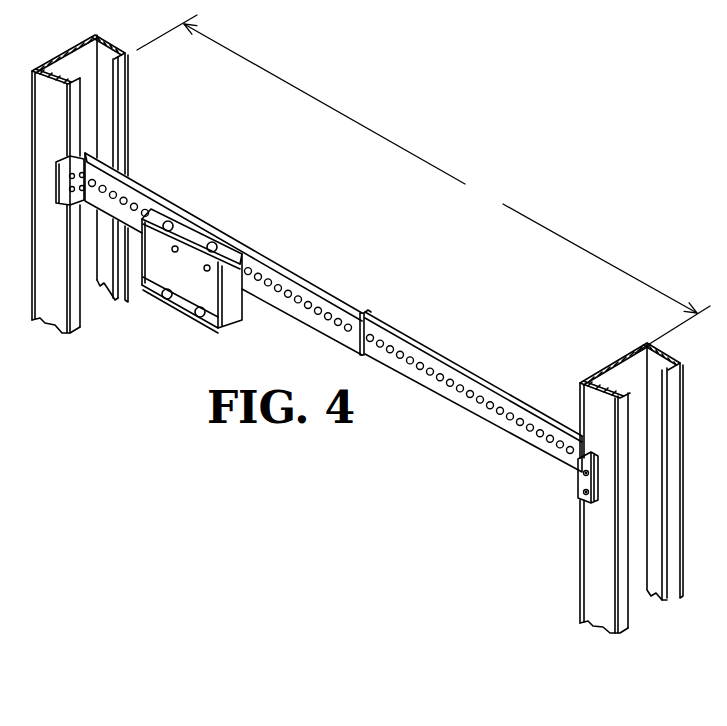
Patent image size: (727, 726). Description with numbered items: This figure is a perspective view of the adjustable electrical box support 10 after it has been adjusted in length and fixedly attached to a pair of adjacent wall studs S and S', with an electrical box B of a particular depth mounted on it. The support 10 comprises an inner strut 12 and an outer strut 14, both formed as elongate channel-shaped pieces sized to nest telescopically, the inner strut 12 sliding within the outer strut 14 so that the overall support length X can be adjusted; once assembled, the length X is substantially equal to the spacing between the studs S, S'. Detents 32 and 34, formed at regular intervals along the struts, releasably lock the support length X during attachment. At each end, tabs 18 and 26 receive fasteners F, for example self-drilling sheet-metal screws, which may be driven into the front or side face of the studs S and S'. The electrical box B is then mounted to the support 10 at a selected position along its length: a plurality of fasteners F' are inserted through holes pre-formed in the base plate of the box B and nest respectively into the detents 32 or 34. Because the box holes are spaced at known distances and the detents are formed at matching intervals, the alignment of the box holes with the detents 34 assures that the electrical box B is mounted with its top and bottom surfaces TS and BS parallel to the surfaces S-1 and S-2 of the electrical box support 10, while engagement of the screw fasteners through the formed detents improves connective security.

The adjustable electrical box support 10 is at (336, 232).
The inner strut 12 is at (425, 347).
The outer strut 14 is at (287, 273).
The tab 18 is at (578, 483).
The tab 26 is at (88, 172).
The detents 32 is at (463, 398).
The detents 34 is at (325, 296).
The electrical box B is at (175, 312).
The bottom surface BS is at (202, 322).
The top surface TS is at (222, 229).
The fasteners F is at (312, 321).
The fasteners F' is at (208, 227).
The stud S is at (631, 480).
The stud S' is at (105, 184).
The surface of electrical box support S-1 is at (135, 182).
The surface of electrical box support S-2 is at (498, 393).
The support length X is at (423, 184).